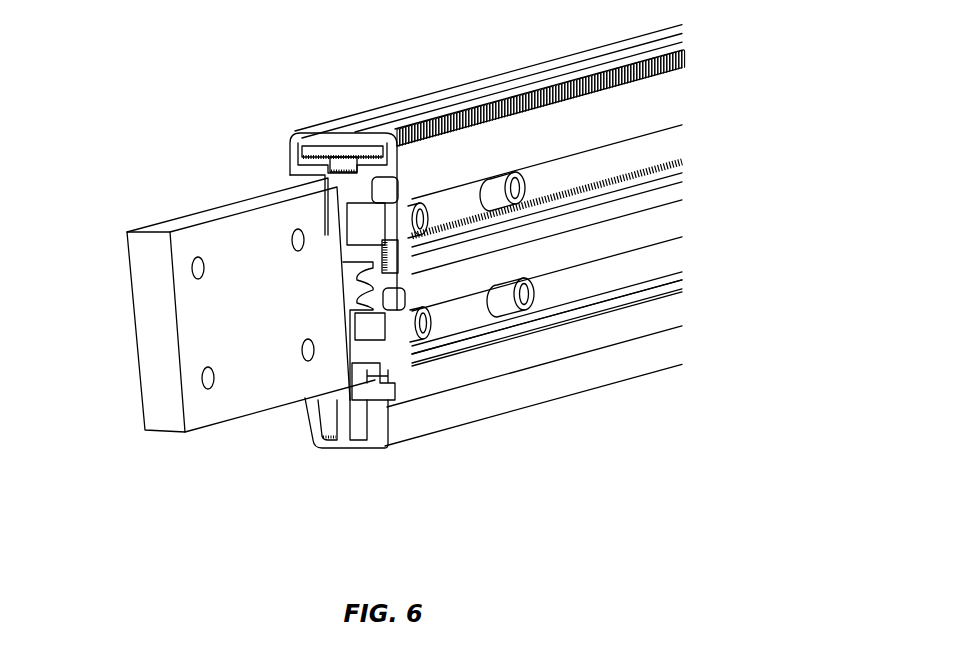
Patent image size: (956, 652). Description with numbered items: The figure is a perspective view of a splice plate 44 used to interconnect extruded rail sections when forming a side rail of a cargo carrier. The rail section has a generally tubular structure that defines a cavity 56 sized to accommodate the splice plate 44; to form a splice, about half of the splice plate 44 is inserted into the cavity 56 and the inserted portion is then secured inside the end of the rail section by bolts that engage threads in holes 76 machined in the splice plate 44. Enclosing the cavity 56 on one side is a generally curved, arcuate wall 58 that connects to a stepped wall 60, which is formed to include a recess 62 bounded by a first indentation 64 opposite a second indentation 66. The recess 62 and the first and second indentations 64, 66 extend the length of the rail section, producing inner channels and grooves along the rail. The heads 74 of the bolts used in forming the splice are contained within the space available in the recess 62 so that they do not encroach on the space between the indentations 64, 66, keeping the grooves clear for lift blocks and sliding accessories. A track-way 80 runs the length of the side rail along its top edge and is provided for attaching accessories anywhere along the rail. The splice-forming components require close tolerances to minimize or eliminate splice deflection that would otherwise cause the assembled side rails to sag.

The splice plate 44 is at (153, 330).
The cavity 56 is at (296, 178).
The arcuate wall 58 is at (310, 425).
The stepped wall 60 is at (358, 437).
The recess 62 is at (362, 232).
The first indentation 64 is at (403, 367).
The second indentation 66 is at (442, 360).
The heads of bolts 74 is at (512, 175).
The holes 76 is at (306, 363).
The track-way 80 is at (345, 142).